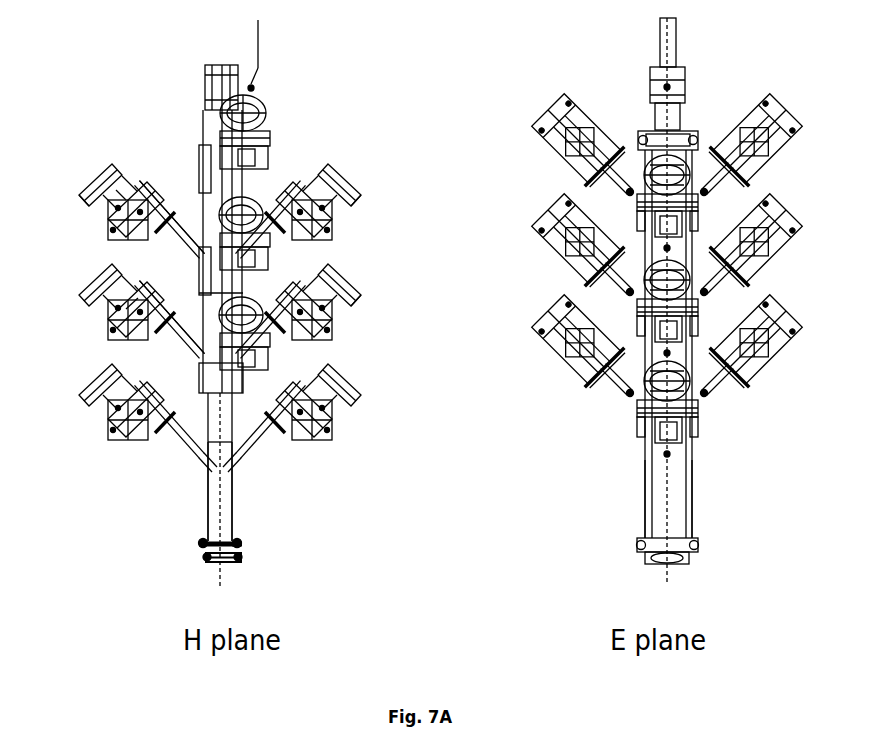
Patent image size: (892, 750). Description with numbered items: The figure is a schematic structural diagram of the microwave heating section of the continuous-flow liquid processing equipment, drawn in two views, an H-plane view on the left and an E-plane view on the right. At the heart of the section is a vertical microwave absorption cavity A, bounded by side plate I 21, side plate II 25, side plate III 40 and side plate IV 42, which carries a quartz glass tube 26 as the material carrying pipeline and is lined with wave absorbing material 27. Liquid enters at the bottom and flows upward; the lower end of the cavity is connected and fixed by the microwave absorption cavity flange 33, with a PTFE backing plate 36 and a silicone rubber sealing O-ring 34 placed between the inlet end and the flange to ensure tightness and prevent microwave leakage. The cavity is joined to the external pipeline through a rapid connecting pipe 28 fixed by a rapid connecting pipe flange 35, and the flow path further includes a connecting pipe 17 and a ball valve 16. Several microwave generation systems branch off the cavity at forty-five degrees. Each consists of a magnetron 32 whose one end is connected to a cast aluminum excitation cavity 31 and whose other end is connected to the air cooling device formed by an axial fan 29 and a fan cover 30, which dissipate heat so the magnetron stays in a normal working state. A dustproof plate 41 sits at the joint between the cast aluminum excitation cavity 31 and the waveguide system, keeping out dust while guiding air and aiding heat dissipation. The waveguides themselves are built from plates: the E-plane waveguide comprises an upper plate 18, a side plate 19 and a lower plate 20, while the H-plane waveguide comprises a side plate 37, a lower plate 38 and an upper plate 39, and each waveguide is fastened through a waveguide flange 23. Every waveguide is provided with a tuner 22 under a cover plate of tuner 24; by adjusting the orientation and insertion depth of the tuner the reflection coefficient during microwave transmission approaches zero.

The ball valve 16 is at (205, 80).
The connecting pipe 17 is at (210, 123).
The upper plate of E-plane waveguide 18 is at (125, 175).
The side plate of E-plane waveguide 19 is at (118, 203).
The lower plate of E-plane waveguide 20 is at (100, 210).
The side plate I of microwave absorption cavity A 21 is at (205, 266).
The tuner 22 is at (120, 300).
The waveguide flange 23 is at (160, 325).
The cover plate of tuner 24 is at (195, 353).
The side plate II of microwave absorption cavity A 25 is at (208, 514).
The quartz glass tube 26 is at (208, 538).
The wave absorbing material 27 is at (200, 543).
The rapid connecting pipe 28 is at (210, 562).
The axial fan 29 is at (320, 175).
The fan cover 30 is at (353, 205).
The cast aluminum excitation cavity 31 is at (318, 277).
The magnetron 32 is at (353, 300).
The microwave absorption cavity flange 33 is at (237, 540).
The silicone rubber sealing O-ring 34 is at (240, 543).
The rapid connecting pipe flange 35 is at (242, 545).
The PTFE backing plate 36 is at (242, 553).
The side plate of H-plane waveguide 37 is at (585, 186).
The lower plate of H-plane waveguide 38 is at (585, 286).
The upper plate of H-plane waveguide 39 is at (585, 387).
The side plate III of microwave absorption cavity A 40 is at (698, 146).
The dustproof plate 41 is at (695, 330).
The side plate IV of microwave absorption cavity A 42 is at (677, 510).